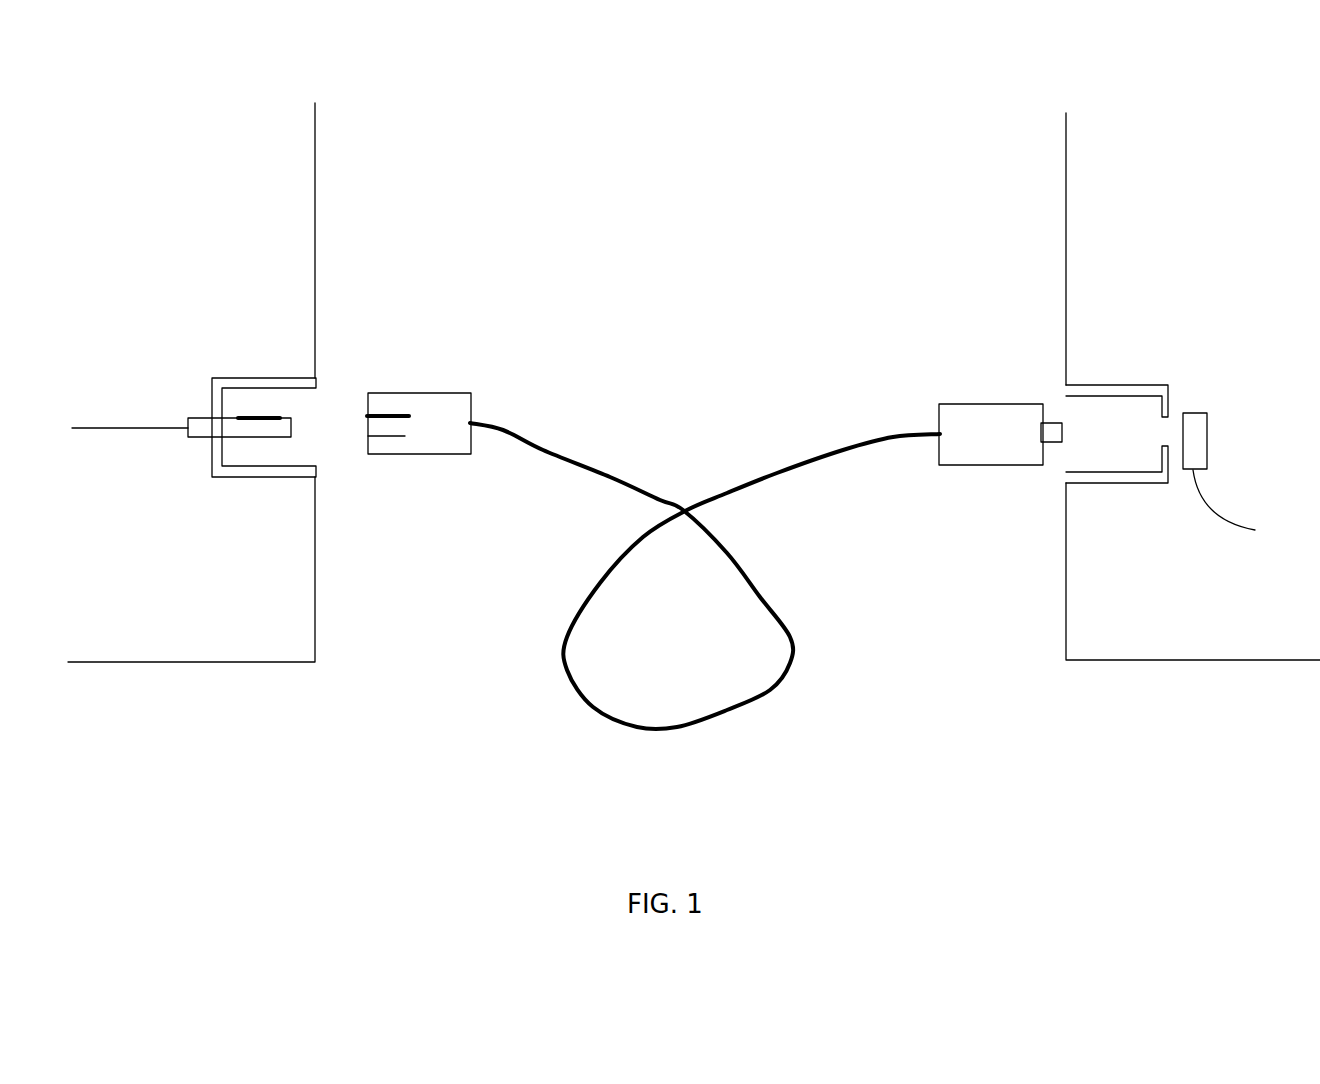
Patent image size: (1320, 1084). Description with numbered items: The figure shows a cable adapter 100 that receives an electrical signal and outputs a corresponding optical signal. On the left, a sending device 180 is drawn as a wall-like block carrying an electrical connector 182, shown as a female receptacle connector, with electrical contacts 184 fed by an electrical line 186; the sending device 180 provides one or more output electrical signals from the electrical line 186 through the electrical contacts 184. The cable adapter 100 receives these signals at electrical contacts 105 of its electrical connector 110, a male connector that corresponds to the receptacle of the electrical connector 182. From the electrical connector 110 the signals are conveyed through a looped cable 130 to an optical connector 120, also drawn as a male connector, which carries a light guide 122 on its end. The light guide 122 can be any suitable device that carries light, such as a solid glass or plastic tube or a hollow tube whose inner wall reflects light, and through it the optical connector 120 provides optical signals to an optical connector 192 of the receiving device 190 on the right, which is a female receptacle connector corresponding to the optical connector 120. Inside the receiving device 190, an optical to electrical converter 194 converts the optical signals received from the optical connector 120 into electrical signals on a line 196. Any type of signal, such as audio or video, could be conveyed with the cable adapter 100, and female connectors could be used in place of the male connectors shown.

The cable adapter 100 is at (606, 749).
The electrical contacts 105 is at (402, 414).
The electrical connector 110 is at (400, 455).
The optical connector 120 is at (992, 404).
The light guide 122 is at (1052, 442).
The cable 130 is at (652, 490).
The sending device 180 is at (233, 662).
The electrical connector 182 is at (298, 452).
The electrical contacts 184 is at (273, 418).
The electrical line 186 is at (138, 428).
The receiving device 190 is at (1150, 662).
The optical connector 192 is at (1093, 483).
The optical to electrical converter 194 is at (1208, 413).
The line 196 is at (1232, 517).